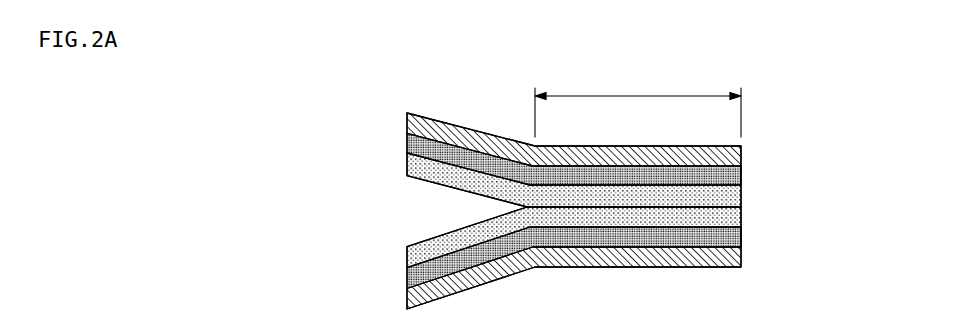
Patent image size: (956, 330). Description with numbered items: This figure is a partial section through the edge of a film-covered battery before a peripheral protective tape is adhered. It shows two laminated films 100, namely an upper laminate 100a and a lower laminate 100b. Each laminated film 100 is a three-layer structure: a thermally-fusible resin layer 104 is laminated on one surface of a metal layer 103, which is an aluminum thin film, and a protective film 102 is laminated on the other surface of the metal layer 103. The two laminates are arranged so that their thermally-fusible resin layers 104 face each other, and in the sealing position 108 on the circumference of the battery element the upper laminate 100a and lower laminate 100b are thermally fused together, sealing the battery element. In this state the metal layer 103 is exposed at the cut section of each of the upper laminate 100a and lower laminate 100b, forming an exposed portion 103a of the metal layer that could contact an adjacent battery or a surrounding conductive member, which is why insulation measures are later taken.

The laminated film 100 is at (85, 113).
The upper laminate 100a is at (227, 82).
The lower laminate 100b is at (227, 222).
The protective film 102 is at (407, 123).
The metal layer 103 is at (406, 142).
The exposed portion of the metal layer 103a is at (741, 231).
The thermally-fusible resin layer 104 is at (406, 255).
The sealing position 108 is at (638, 104).